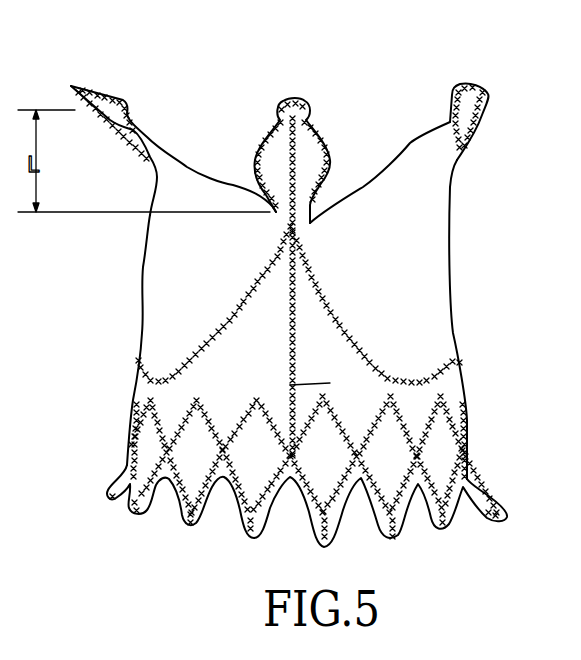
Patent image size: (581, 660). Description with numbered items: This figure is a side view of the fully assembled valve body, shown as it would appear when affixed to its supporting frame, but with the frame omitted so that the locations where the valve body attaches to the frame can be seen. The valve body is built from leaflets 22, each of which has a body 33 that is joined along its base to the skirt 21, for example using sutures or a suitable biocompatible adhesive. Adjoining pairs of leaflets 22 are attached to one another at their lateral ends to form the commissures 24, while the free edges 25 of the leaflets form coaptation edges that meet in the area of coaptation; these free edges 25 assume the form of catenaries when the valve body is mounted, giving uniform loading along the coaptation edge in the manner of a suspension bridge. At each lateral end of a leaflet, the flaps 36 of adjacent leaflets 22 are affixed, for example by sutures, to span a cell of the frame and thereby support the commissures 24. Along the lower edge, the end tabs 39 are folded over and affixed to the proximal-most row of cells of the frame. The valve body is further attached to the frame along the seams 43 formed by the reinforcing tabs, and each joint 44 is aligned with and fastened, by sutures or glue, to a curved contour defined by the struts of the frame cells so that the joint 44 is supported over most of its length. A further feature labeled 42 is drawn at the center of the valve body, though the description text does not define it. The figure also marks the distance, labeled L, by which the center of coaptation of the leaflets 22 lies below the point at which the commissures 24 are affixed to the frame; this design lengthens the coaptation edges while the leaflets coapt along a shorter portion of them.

The skirt 21 is at (150, 400).
The leaflet 22 is at (457, 185).
The commissure 24 is at (94, 98).
The free edge 25 is at (393, 158).
The body 33 is at (397, 257).
The flap 36 is at (279, 129).
The end tab 39 is at (310, 513).
The center seam 42 is at (279, 143).
The seam 43 is at (330, 383).
The joint 44 is at (142, 372).